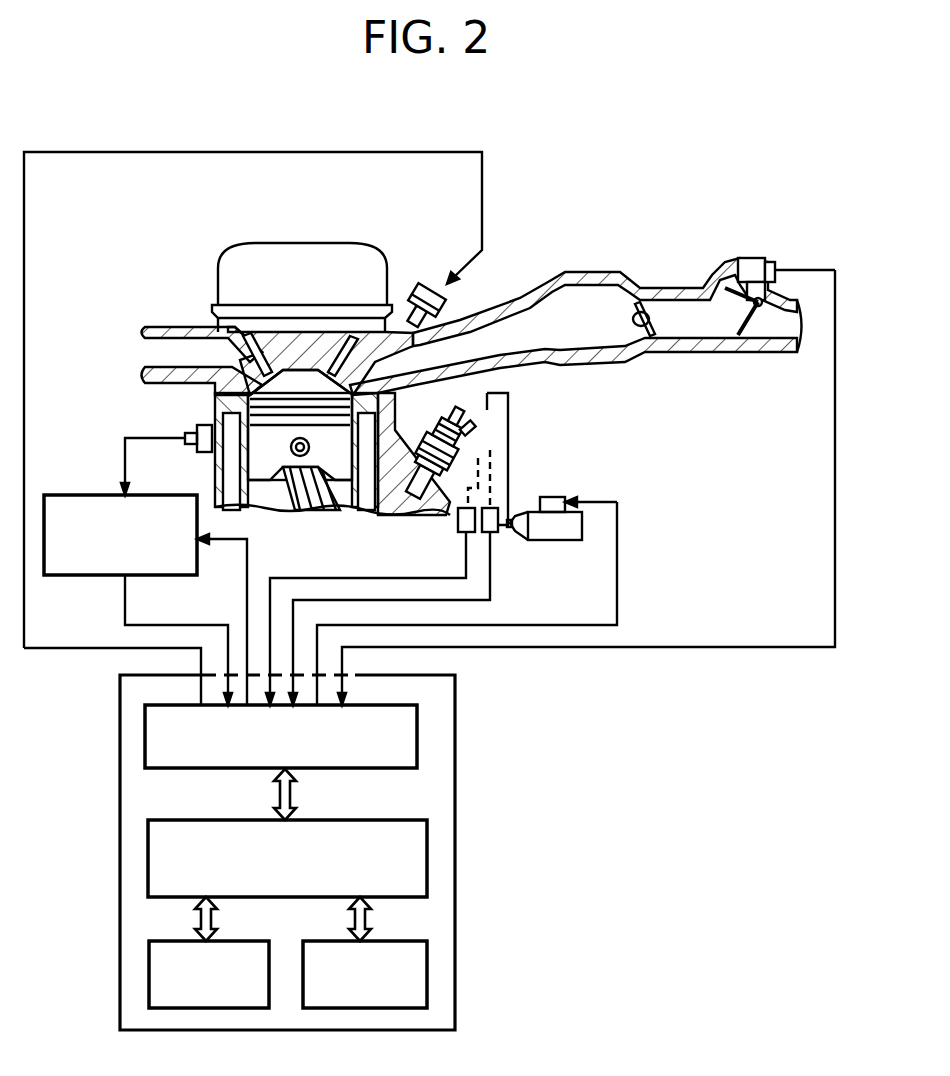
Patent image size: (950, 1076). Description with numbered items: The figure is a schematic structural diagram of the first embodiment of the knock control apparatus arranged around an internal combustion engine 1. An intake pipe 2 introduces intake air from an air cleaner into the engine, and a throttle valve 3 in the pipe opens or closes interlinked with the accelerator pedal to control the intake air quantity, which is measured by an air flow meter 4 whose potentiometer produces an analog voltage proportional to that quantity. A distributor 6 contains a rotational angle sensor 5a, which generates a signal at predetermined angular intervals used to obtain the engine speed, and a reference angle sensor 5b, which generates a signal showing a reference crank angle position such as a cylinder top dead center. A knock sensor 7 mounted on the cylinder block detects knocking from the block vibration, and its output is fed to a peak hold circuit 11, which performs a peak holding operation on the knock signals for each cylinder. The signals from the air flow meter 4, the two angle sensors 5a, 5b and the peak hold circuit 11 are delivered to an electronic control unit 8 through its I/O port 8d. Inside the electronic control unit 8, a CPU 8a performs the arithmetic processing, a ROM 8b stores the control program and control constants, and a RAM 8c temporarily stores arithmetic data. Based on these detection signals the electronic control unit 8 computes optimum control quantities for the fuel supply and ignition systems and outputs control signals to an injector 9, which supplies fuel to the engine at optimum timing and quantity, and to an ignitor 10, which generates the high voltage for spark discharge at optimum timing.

The internal combustion engine 1 is at (222, 268).
The intake pipe 2 is at (543, 333).
The throttle valve 3 is at (650, 318).
The air flow meter 4 is at (762, 258).
The rotational angle sensor 5a is at (458, 524).
The reference angle sensor 5b is at (498, 535).
The distributor 6 is at (490, 438).
The knock sensor 7 is at (205, 426).
The electronic control unit 8 is at (455, 826).
The CPU 8a is at (230, 820).
The ROM 8b is at (240, 940).
The RAM 8c is at (392, 940).
The I/O port 8d is at (357, 770).
The injector 9 is at (418, 293).
The ignitor 10 is at (562, 540).
The peak hold circuit 11 is at (84, 578).